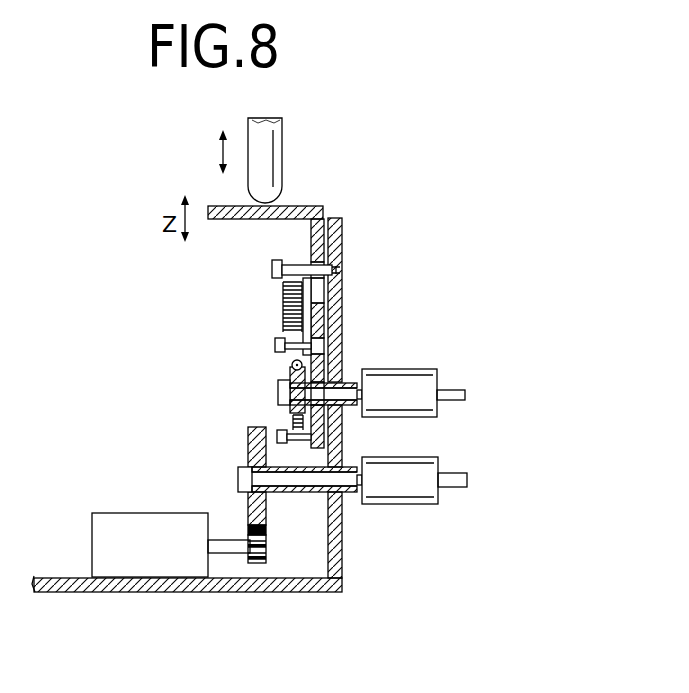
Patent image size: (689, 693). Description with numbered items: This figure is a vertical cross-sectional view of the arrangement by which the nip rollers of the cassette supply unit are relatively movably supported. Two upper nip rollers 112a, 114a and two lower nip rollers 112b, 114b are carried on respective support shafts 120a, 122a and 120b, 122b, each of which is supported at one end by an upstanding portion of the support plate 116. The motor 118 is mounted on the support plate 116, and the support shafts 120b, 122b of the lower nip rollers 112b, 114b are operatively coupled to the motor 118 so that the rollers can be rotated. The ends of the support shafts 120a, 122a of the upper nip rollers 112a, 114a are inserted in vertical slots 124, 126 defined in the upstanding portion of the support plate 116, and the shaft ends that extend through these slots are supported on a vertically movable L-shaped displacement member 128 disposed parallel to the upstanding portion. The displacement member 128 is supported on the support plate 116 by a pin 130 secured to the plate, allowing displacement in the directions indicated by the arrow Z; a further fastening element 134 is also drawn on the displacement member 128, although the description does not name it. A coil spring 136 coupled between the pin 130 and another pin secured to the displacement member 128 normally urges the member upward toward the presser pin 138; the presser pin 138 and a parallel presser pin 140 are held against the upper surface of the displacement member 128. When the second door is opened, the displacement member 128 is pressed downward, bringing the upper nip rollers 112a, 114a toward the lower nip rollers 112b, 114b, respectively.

The nip roller 112a is at (491, 385).
The nip roller 114a is at (428, 384).
The nip roller 112b is at (467, 504).
The nip roller 114b is at (428, 488).
The support plate 116 is at (250, 592).
The motor 118 is at (150, 532).
The support shaft 120a is at (399, 363).
The support shaft 122a is at (352, 382).
The support shaft 120b is at (370, 509).
The support shaft 122b is at (313, 478).
The vertical slot 124 is at (394, 318).
The vertical slot 126 is at (307, 316).
The displacement member 128 is at (307, 208).
The pin 130 is at (343, 247).
The bolt 134 is at (275, 345).
The coil spring 136 is at (283, 288).
The presser pin 138 is at (336, 151).
The presser pin 140 is at (267, 142).